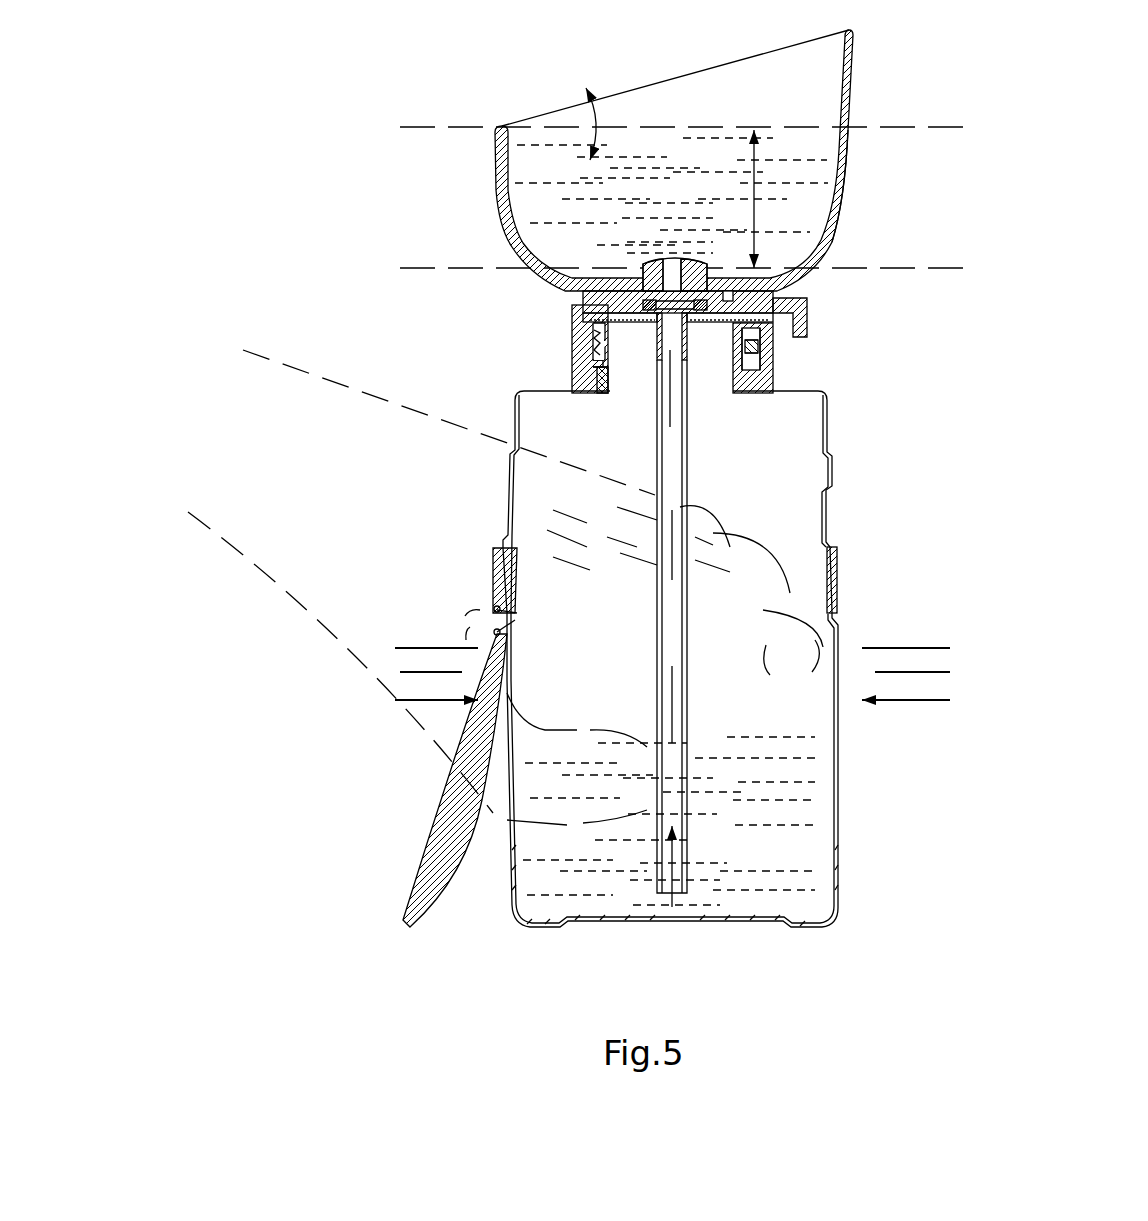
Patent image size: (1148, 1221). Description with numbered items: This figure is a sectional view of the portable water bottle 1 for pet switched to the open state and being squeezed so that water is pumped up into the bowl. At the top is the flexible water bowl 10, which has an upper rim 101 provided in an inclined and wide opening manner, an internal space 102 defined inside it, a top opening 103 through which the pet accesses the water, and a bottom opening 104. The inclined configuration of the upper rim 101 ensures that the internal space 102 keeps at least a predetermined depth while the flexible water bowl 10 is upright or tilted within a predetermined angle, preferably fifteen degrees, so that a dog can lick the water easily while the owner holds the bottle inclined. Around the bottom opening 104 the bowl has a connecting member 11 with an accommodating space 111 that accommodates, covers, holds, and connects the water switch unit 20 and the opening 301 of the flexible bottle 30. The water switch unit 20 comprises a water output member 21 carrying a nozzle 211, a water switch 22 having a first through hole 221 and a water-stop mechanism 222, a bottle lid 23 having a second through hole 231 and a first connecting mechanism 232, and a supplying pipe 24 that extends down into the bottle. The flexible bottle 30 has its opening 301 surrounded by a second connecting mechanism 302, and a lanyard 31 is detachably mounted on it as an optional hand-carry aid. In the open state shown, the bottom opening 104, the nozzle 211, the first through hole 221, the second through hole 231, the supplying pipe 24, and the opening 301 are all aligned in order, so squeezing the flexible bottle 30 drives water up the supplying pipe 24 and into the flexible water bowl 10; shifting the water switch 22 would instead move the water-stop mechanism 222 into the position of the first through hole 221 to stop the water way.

The portable water bottle 1 is at (948, 217).
The flexible water bowl 10 is at (853, 105).
The upper rim 101 is at (838, 58).
The internal space 102 is at (677, 157).
The top opening 103 is at (693, 93).
The bottom opening 104 is at (630, 361).
The connecting member 11 is at (583, 305).
The accommodating space 111 is at (612, 367).
The water switch unit 20 is at (860, 288).
The water output member 21 is at (650, 300).
The nozzle 211 is at (663, 260).
The water switch 22 is at (807, 333).
The first through hole 221 is at (758, 337).
The water-stop mechanism 222 is at (780, 348).
The bottle lid 23 is at (757, 347).
The second through hole 231 is at (758, 350).
The first connecting mechanism 232 is at (752, 363).
The supplying pipe 24 is at (677, 480).
The flexible bottle 30 is at (513, 423).
The opening 301 is at (633, 345).
The second connecting mechanism 302 is at (593, 352).
The lanyard 31 is at (498, 573).